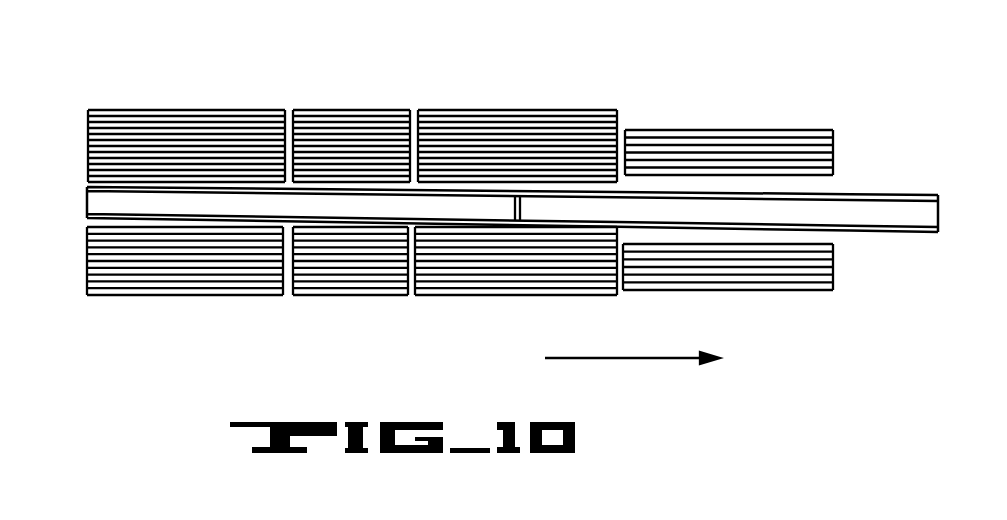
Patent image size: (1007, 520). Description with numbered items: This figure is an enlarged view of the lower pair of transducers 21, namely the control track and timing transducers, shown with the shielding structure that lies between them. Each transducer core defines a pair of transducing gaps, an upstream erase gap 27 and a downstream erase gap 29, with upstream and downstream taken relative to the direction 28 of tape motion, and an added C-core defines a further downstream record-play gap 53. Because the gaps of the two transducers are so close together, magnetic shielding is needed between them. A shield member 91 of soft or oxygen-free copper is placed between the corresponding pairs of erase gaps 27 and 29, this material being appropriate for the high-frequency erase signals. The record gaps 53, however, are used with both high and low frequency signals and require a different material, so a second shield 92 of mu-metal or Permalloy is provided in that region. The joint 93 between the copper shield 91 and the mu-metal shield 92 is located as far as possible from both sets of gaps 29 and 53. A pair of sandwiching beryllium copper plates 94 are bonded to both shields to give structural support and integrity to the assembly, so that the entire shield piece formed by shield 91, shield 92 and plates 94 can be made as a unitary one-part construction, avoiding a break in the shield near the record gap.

The transducers 21 is at (86, 92).
The transducing gap 27 is at (290, 100).
The transducing gap 29 is at (415, 100).
The record-play gap 53 is at (630, 112).
The shield member 91 is at (123, 198).
The joint 93 is at (527, 208).
The beryllium copper plates 94 is at (673, 190).
The shield 92 is at (843, 210).
The direction of tape motion 28 is at (622, 360).